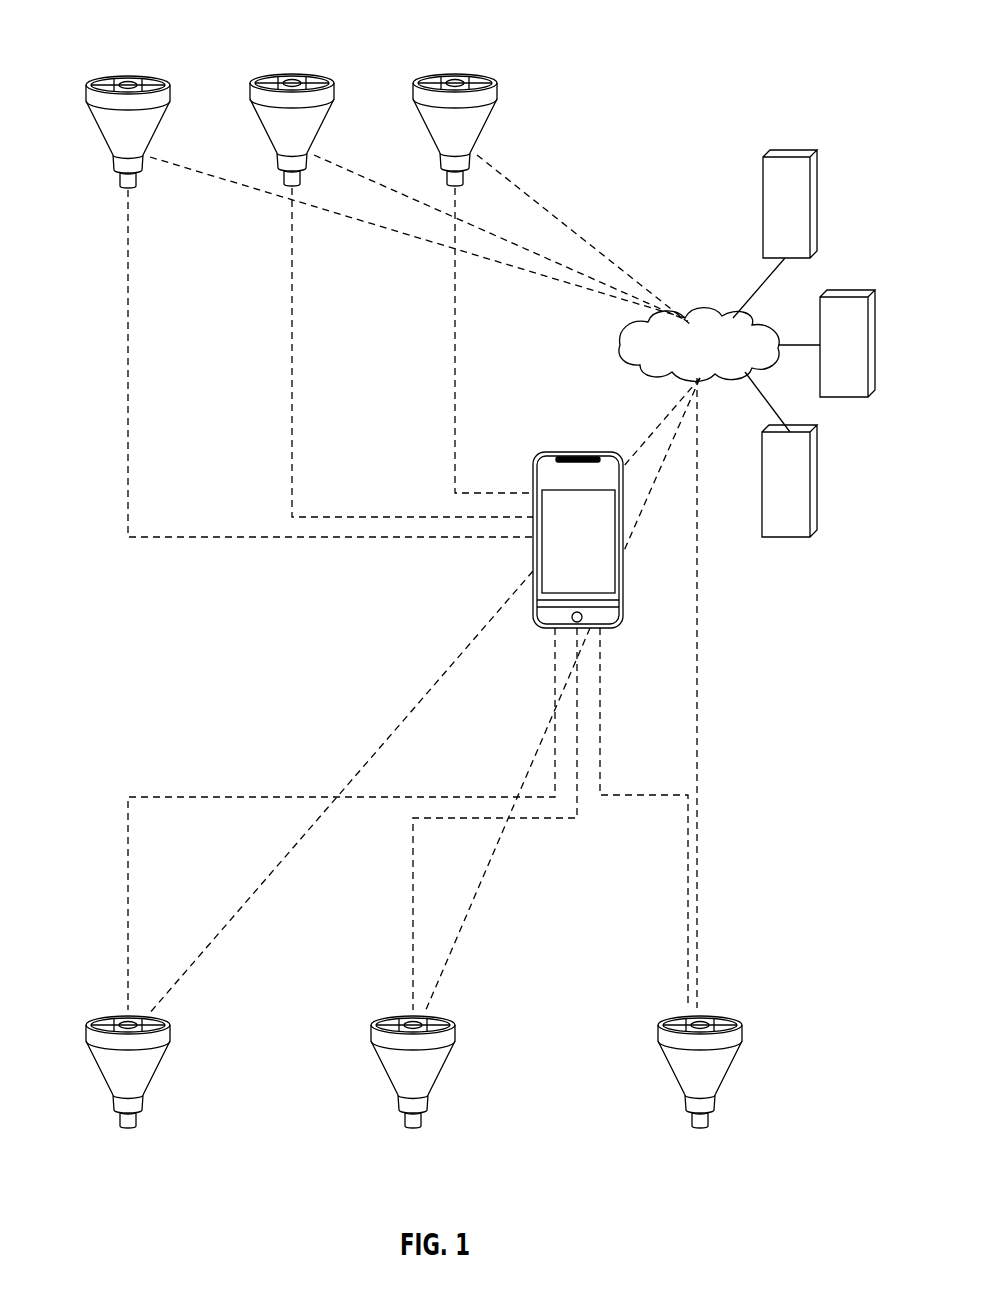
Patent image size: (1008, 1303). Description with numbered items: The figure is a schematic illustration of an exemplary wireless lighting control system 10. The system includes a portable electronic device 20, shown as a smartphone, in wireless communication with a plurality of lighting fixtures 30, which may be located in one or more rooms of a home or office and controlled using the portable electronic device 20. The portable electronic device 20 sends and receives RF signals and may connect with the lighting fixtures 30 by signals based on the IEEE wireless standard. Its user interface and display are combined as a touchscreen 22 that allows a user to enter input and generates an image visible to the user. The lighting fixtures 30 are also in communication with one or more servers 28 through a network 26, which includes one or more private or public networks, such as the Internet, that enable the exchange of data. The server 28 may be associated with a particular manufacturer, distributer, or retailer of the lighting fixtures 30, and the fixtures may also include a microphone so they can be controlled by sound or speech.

The wireless lighting control system 10 is at (746, 59).
The portable electronic device 20 is at (583, 452).
The touchscreen 22 is at (582, 553).
The network 26 is at (712, 318).
The server 28 is at (763, 160).
The lighting fixture 30 is at (112, 76).